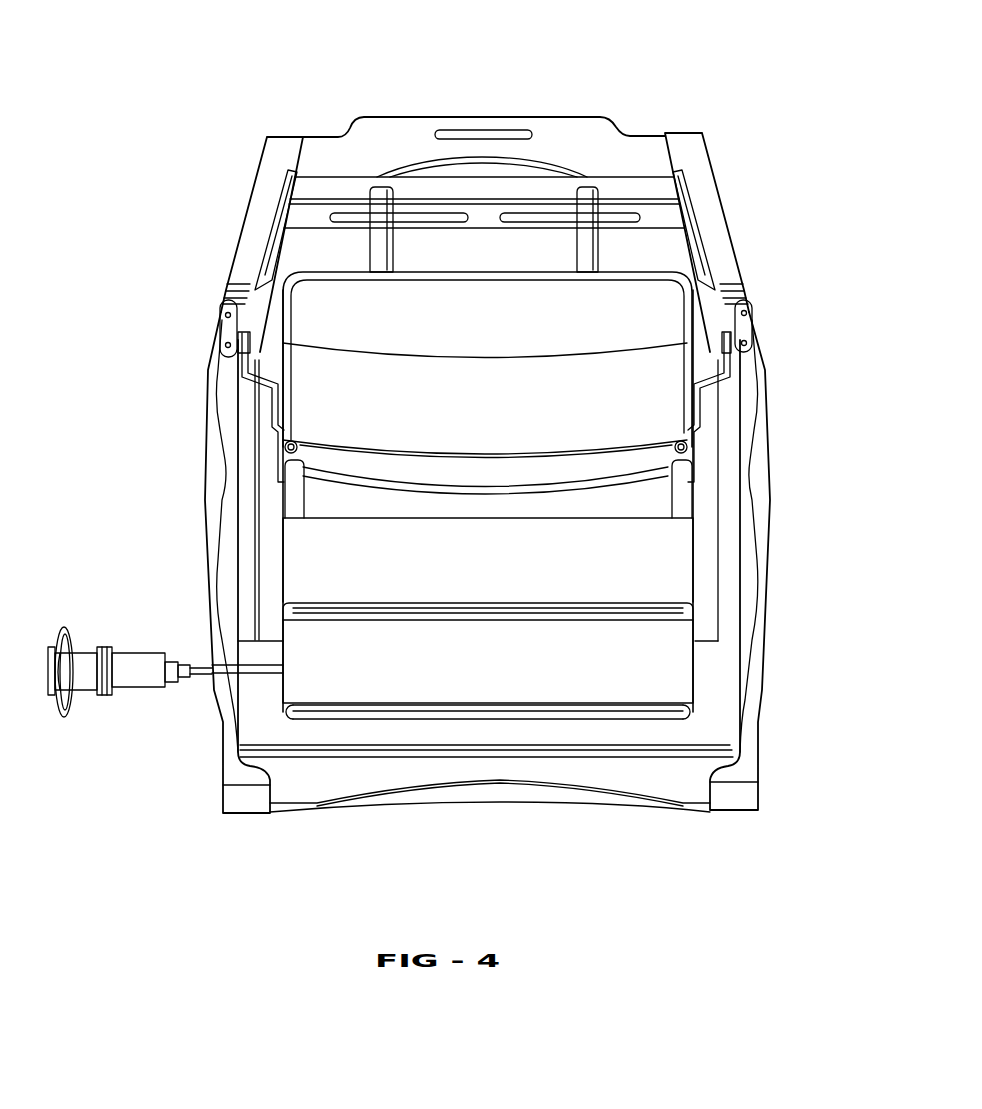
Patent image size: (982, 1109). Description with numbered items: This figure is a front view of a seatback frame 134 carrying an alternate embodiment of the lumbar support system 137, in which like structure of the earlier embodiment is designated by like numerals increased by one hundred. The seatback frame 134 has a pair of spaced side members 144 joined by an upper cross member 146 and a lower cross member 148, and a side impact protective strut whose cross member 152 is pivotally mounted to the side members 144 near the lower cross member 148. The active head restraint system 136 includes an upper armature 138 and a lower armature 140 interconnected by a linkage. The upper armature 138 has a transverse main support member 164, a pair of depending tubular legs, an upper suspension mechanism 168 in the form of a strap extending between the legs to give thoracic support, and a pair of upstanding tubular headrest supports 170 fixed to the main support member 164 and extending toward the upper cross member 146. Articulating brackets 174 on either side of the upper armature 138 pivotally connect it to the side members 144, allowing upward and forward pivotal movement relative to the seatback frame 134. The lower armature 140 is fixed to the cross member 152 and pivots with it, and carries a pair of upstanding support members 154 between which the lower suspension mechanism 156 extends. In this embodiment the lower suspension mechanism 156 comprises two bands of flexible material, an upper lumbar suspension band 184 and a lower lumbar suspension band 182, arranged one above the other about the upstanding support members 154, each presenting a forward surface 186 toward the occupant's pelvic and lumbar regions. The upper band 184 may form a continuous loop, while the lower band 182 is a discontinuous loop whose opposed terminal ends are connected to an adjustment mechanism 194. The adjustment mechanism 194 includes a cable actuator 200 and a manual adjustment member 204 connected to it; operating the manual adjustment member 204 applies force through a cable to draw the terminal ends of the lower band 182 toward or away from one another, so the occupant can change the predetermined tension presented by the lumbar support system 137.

The seatback frame 134 is at (735, 141).
The active head restraint system 136 is at (667, 250).
The lumbar support system 137 is at (777, 649).
The upper armature 138 is at (270, 291).
The lower armature 140 is at (705, 487).
The side members 144 is at (258, 188).
The upper cross member 146 is at (513, 132).
The lower cross member 148 is at (565, 808).
The cross member 152 is at (597, 745).
The upstanding support members 154 is at (303, 500).
The lower suspension mechanism 156 is at (280, 527).
The main support member 164 is at (472, 278).
The upper suspension mechanism 168 is at (467, 367).
The upstanding tubular headrest supports 170 is at (400, 205).
The articulating brackets 174 is at (717, 387).
The lower lumbar suspension band 182 is at (705, 685).
The upper lumbar suspension band 184 is at (700, 549).
The forward surface 186 is at (507, 533).
The adjustment mechanism 194 is at (130, 719).
The cable actuator 200 is at (145, 683).
The manual adjustment member 204 is at (73, 697).